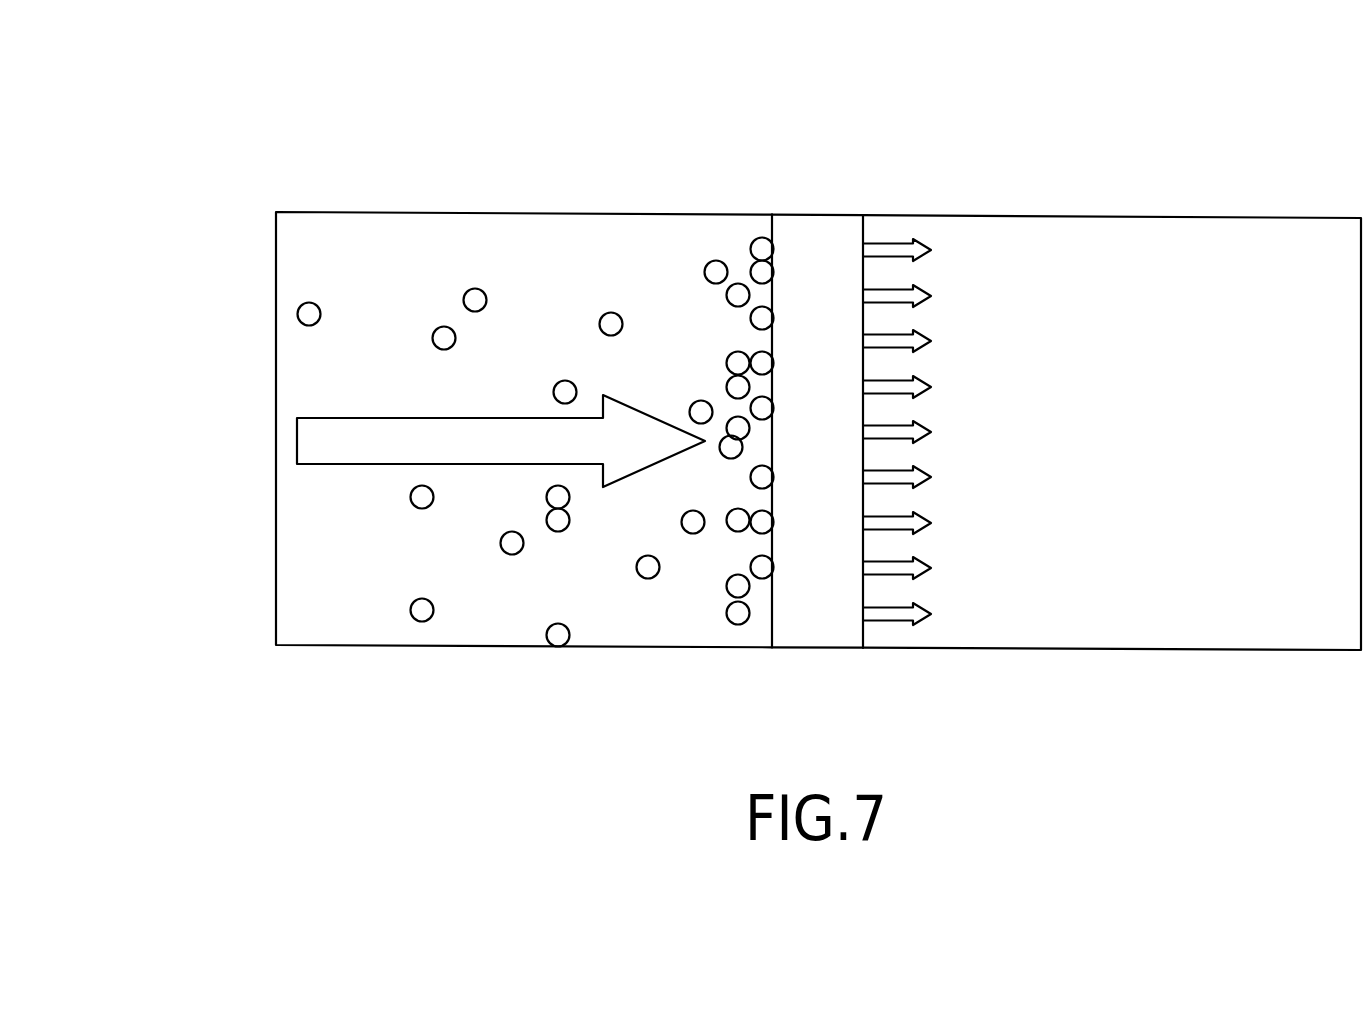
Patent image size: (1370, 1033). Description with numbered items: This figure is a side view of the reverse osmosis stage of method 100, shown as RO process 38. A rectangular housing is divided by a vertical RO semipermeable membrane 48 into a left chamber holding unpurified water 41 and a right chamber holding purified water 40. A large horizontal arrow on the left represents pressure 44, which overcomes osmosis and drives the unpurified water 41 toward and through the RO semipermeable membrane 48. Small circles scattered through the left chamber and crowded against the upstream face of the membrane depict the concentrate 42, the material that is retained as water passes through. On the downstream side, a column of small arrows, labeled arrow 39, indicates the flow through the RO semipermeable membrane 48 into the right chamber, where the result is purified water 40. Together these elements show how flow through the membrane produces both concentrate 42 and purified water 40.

The method 100 is at (1084, 116).
The RO process 38 is at (190, 238).
The unpurified water 41 is at (360, 230).
The RO semipermeable membrane 48 is at (817, 232).
The purified water 40 is at (1292, 238).
The pressure 44 is at (322, 443).
The concentrate 42 is at (648, 567).
The arrow 39 is at (920, 568).